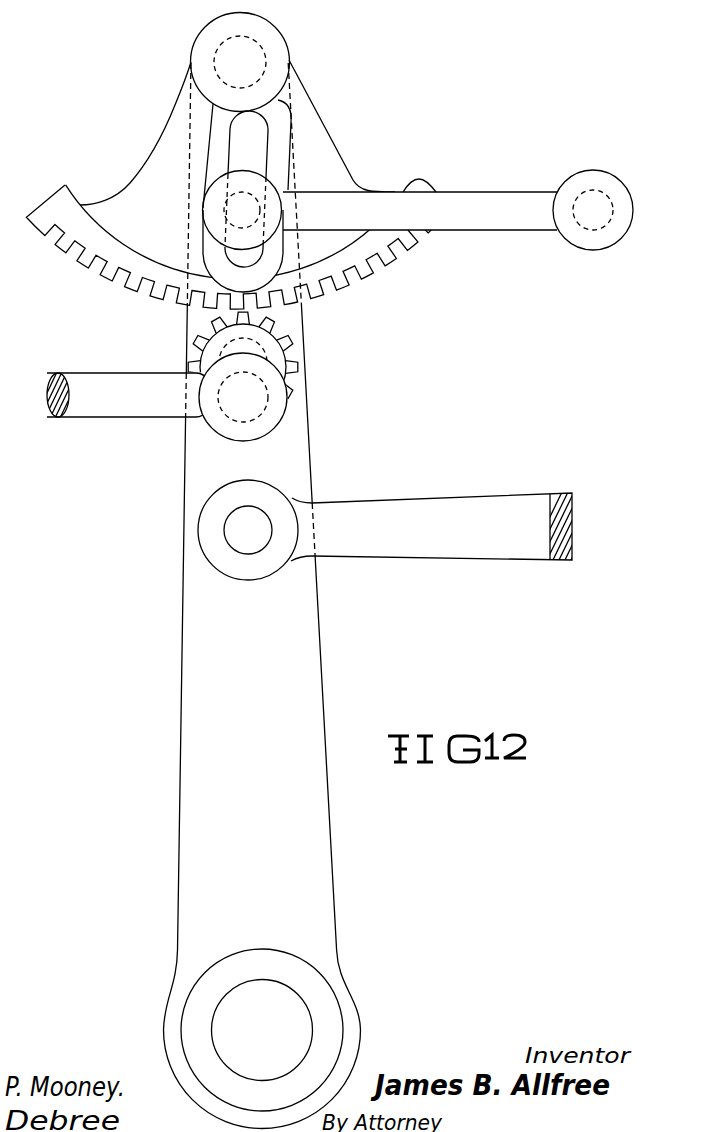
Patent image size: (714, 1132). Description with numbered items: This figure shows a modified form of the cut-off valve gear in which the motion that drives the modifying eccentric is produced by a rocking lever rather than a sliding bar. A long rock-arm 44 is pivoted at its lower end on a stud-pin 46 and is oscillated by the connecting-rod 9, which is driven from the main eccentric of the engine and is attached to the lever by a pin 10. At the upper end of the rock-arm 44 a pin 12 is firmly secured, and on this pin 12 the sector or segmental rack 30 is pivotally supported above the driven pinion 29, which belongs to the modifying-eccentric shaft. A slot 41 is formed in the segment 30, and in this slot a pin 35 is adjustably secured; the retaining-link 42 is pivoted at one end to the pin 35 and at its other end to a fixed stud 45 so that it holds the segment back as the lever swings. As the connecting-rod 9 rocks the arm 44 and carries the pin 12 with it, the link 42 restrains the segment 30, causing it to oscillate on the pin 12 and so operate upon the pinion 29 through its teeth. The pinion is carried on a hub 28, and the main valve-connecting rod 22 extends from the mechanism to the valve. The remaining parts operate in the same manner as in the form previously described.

The main-eccentric rod 9 is at (492, 498).
The pin 10 is at (250, 529).
The stud 12 is at (240, 62).
The main valve-connecting rod 22 is at (92, 405).
The hub 28 is at (262, 405).
The modifying-eccentric-shaft pinion 29 is at (295, 343).
The sector or segmental rack 30 is at (67, 245).
The pin 35 is at (240, 213).
The slot 41 is at (250, 145).
The retaining-link 42 is at (502, 230).
The rock-arm 44 is at (302, 665).
The pivot 45 is at (600, 212).
The stud-pin 46 is at (293, 1010).